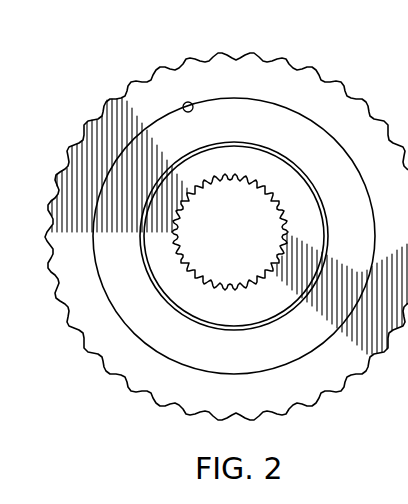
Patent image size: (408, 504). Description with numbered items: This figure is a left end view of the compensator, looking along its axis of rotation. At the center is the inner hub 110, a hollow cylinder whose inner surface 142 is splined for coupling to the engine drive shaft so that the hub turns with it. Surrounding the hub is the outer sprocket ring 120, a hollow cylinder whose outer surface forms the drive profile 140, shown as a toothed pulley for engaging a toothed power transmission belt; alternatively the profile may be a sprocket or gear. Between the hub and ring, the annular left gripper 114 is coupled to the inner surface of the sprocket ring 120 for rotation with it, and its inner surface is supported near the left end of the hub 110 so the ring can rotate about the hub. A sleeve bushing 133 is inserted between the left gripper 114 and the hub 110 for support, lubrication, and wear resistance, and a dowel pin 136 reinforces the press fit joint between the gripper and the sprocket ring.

The inner hub 110 is at (158, 283).
The left gripper 114 is at (269, 117).
The outer sprocket ring 120 is at (125, 107).
The sleeve bushing 133 is at (170, 305).
The dowel pin 136 is at (184, 103).
The drive profile 140 is at (127, 93).
The inner surface 142 is at (283, 213).